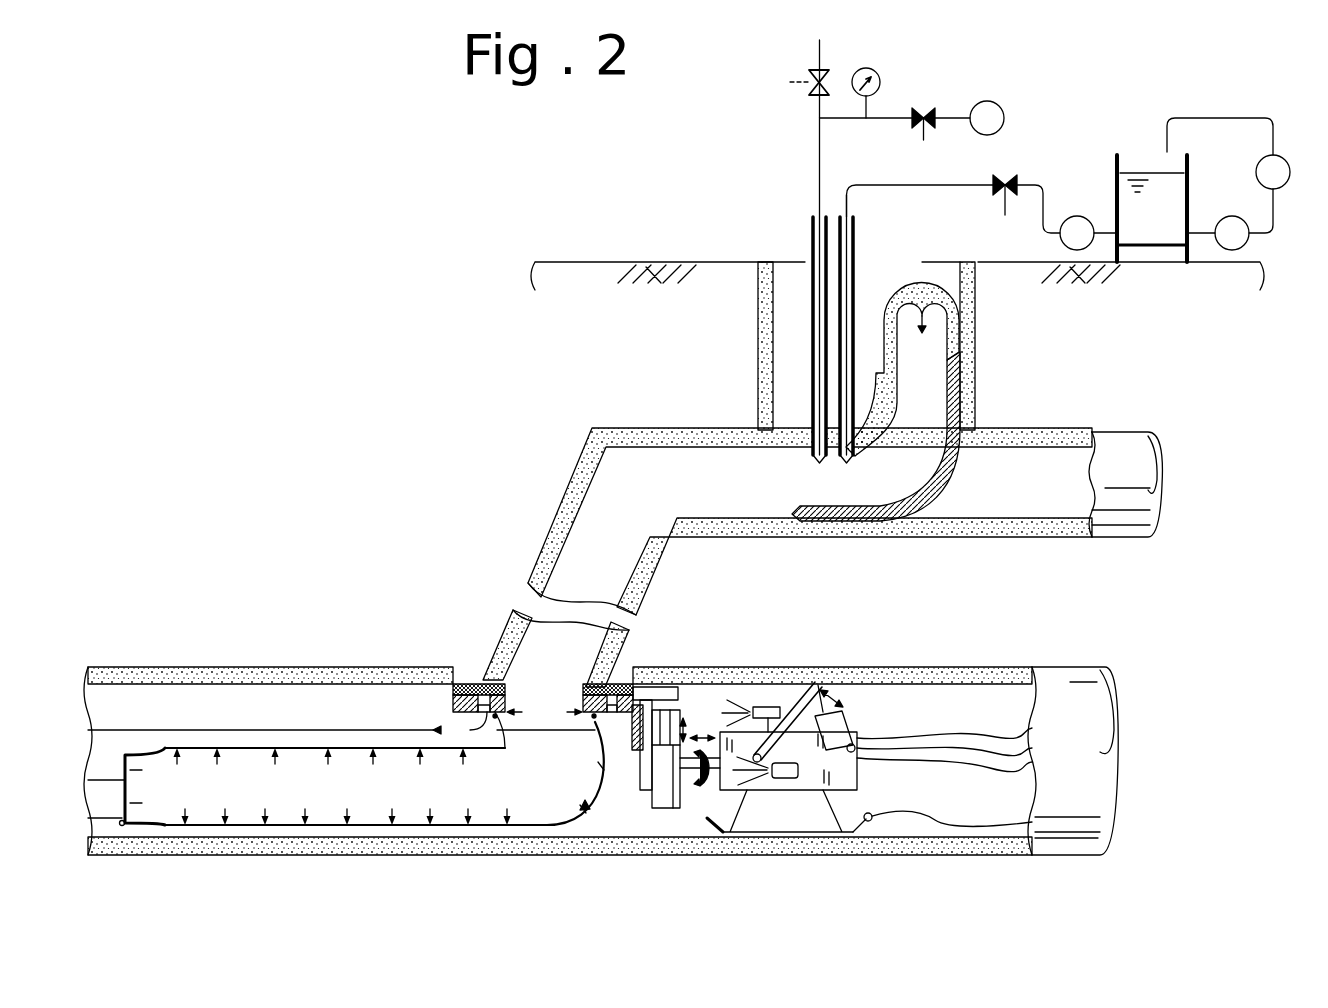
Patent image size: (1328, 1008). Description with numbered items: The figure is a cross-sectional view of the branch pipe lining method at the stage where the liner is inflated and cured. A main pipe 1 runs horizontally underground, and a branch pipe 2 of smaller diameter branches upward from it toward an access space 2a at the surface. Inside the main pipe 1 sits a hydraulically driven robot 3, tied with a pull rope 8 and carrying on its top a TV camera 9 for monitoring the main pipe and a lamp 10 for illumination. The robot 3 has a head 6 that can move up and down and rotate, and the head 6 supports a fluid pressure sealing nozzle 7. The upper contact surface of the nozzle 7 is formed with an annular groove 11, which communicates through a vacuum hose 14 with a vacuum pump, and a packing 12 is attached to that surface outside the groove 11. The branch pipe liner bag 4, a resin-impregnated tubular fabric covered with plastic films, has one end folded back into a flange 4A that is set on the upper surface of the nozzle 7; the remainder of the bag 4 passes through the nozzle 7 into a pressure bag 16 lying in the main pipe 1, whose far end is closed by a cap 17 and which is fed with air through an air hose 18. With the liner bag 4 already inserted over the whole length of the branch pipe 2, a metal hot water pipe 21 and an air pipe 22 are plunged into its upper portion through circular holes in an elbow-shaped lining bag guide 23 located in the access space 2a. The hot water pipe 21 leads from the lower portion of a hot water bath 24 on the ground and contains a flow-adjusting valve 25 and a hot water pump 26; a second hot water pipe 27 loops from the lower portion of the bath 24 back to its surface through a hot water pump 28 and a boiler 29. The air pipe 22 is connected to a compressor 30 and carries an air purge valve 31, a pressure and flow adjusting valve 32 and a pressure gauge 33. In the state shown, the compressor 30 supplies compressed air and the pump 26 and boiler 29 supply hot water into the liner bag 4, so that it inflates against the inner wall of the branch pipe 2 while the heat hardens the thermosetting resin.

The main pipe 1 is at (896, 667).
The branch pipe 2 is at (632, 628).
The access space 2a is at (957, 263).
The robot 3 is at (858, 772).
The branch pipe liner bag 4 is at (557, 566).
The flange 4A is at (488, 645).
The head 6 is at (664, 810).
The fluid pressure sealing nozzle 7 is at (615, 716).
The pull rope 8 is at (922, 822).
The TV camera 9 is at (770, 706).
The lamp 10 is at (770, 792).
The annular groove 11 is at (617, 684).
The packing 12 is at (452, 700).
The vacuum hose 14 is at (240, 730).
The pressure bag 16 is at (570, 824).
The cap 17 is at (134, 840).
The air hose 18 is at (100, 778).
The hot water pipe 21 is at (851, 257).
The air pipe 22 is at (812, 238).
The lining bag guide 23 is at (937, 490).
The hot water bath 24 is at (1114, 160).
The valve 25 is at (1008, 176).
The hot water pump 26 is at (1070, 216).
The hot water pipe 27 is at (1275, 226).
The hot water pump 28 is at (1220, 218).
The boiler 29 is at (1285, 157).
The compressor 30 is at (1003, 110).
The valve 31 is at (823, 68).
The valve 32 is at (920, 108).
The pressure gauge 33 is at (878, 73).